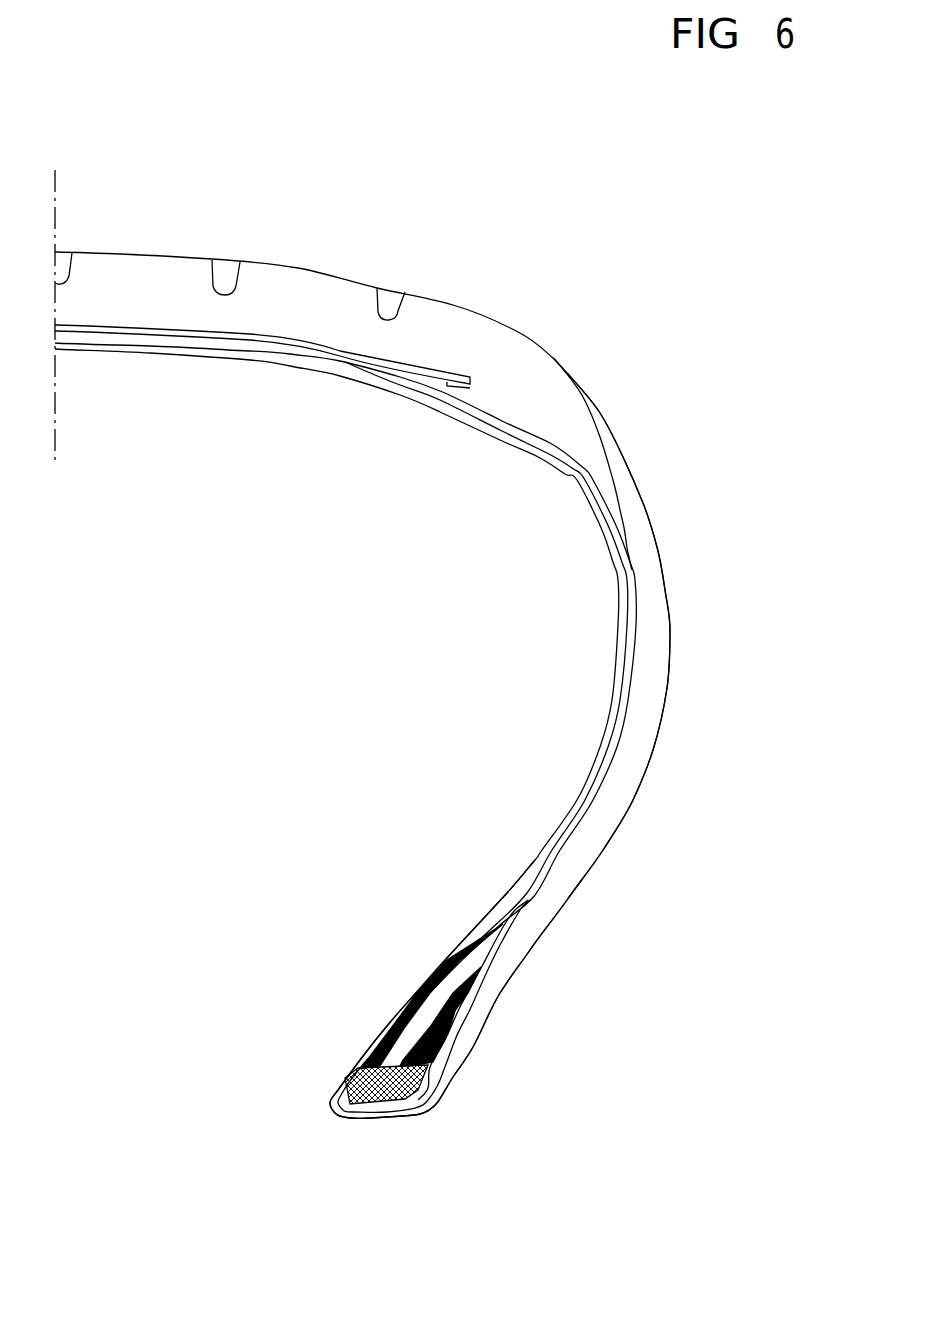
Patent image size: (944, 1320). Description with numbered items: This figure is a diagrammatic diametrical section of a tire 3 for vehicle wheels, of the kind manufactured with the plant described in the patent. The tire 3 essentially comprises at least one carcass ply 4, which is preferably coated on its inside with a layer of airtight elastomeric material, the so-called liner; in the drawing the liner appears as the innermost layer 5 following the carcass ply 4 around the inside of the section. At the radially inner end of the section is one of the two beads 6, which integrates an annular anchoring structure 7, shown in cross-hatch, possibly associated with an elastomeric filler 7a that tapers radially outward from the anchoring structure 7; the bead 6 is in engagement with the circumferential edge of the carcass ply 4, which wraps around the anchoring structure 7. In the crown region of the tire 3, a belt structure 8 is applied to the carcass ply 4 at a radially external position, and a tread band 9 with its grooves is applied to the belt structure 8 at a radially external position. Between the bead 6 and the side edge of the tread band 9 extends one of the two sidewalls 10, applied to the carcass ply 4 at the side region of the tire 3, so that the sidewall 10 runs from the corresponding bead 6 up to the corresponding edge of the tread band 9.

The tire 3 is at (227, 753).
The carcass ply 4 is at (532, 428).
The inner liner 5 is at (455, 410).
The bead 6 is at (487, 1074).
The annular anchoring structure 7 is at (380, 1087).
The elastomeric filler 7a is at (438, 995).
The belt structure 8 is at (433, 358).
The tread band 9 is at (298, 268).
The sidewall 10 is at (667, 688).